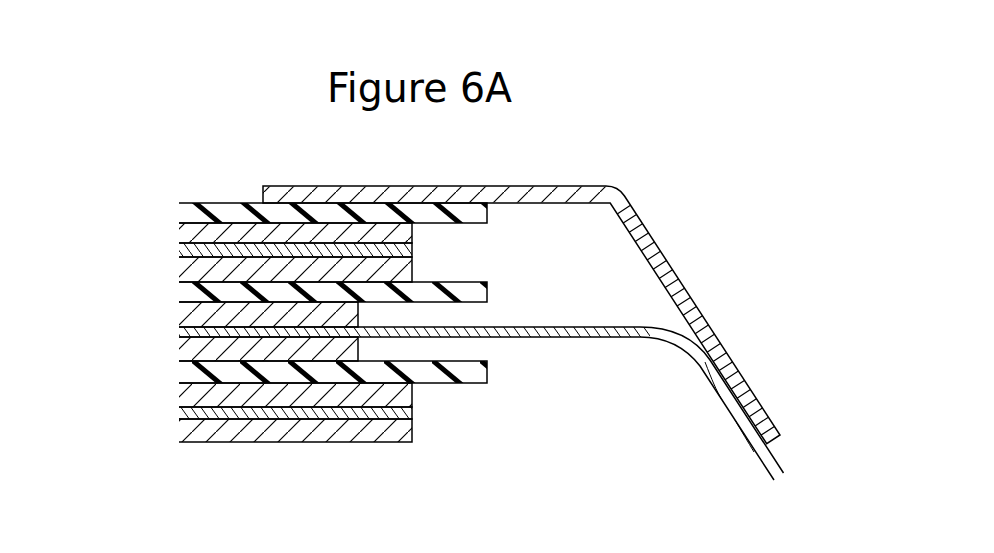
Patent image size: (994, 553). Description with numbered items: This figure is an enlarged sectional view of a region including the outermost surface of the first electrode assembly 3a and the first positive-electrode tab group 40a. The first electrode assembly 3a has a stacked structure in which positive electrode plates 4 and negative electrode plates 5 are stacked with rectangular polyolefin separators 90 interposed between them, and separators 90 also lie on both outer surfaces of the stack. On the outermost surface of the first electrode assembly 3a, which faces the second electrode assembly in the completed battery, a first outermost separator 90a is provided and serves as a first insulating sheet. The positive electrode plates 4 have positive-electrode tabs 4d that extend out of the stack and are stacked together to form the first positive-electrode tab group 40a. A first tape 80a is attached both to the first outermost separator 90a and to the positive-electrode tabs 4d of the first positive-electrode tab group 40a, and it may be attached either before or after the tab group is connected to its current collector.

The first electrode assembly 3a is at (163, 183).
The first outermost separator 90a is at (223, 210).
The negative electrode plate 5 is at (170, 246).
The separator 90 is at (196, 289).
The positive electrode plate 4 is at (170, 331).
The first tape 80a is at (638, 218).
The first positive-electrode tab group 40a is at (584, 338).
The positive-electrode tab 4d is at (729, 407).